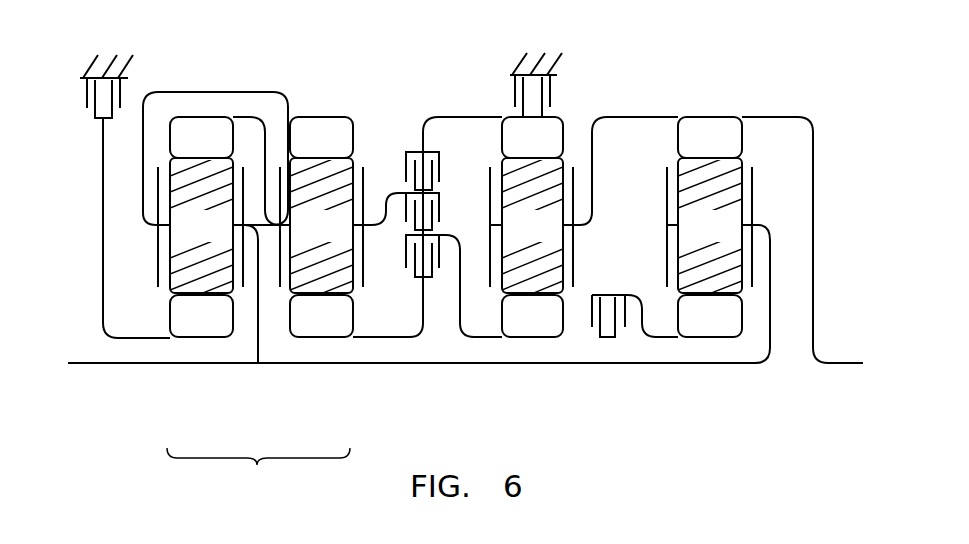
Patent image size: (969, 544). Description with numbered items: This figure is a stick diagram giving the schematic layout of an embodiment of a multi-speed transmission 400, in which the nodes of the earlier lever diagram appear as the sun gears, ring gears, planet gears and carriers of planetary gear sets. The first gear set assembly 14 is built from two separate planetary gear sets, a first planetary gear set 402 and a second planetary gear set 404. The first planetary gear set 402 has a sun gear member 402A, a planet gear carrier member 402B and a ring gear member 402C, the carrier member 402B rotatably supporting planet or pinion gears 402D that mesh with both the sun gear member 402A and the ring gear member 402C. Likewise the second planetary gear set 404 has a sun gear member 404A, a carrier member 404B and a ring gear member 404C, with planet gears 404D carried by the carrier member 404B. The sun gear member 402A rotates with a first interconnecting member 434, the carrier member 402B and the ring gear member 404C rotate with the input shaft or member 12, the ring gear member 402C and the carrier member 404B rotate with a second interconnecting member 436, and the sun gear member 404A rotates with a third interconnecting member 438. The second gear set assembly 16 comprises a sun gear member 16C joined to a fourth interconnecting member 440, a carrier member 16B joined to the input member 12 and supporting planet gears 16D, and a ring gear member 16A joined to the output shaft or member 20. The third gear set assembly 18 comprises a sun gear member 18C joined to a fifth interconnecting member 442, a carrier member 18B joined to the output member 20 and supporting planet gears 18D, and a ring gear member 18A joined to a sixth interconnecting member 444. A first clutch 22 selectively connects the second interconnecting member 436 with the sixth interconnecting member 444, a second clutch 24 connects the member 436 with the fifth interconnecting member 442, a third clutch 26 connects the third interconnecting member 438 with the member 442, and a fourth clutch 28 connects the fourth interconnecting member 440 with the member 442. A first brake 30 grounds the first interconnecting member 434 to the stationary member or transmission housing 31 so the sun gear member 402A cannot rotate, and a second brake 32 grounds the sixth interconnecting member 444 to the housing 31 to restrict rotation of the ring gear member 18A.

The multi-speed transmission 400 is at (782, 62).
The input shaft or member 12 is at (193, 92).
The first gear set assembly 14 is at (258, 474).
The second gear set assembly 16 is at (770, 277).
The ring gear member 16A is at (685, 152).
The planet gear carrier member 16B is at (755, 204).
The sun gear member 16C is at (685, 332).
The planet or pinion gears 16D is at (685, 237).
The third gear set assembly 18 is at (574, 277).
The ring gear member 18A is at (508, 152).
The planet gear carrier member 18B is at (577, 180).
The sun gear member 18C is at (508, 332).
The planet or pinion gears 18D is at (508, 237).
The output shaft or member 20 is at (858, 364).
The first clutch 22 is at (440, 170).
The second clutch 24 is at (440, 215).
The third clutch 26 is at (433, 278).
The fourth clutch 28 is at (620, 329).
The first brake 30 is at (86, 97).
The stationary member or transmission housing 31 is at (85, 76).
The second brake 32 is at (515, 93).
The first planetary gear set 402 is at (175, 277).
The sun gear member 402A is at (175, 332).
The planet gear carrier member 402B is at (158, 268).
The ring gear member 402C is at (175, 152).
The planet or pinion gears 402D is at (175, 237).
The second planetary gear set 404 is at (349, 277).
The sun gear member 404A is at (295, 332).
The planet gear carrier member 404B is at (367, 272).
The ring gear member 404C is at (295, 152).
The planet or pinion gears 404D is at (295, 237).
The first shaft or interconnecting member 434 is at (103, 218).
The second shaft or interconnecting member 436 is at (243, 115).
The third shaft or interconnecting member 438 is at (385, 339).
The fourth shaft or interconnecting member 440 is at (611, 294).
The fifth shaft or interconnecting member 442 is at (488, 339).
The sixth shaft or interconnecting member 444 is at (452, 117).